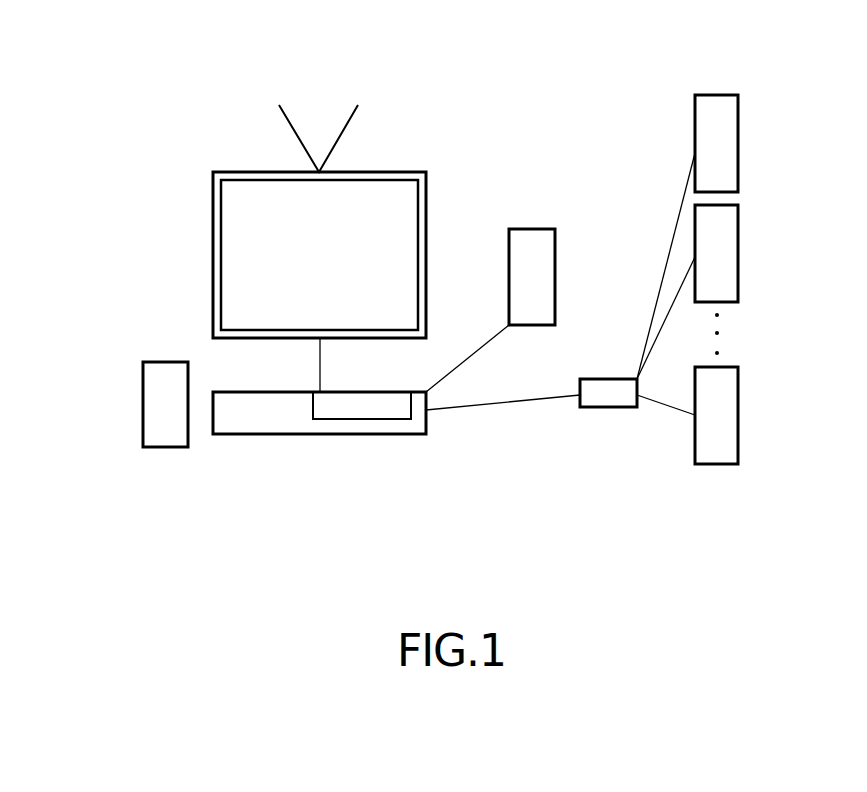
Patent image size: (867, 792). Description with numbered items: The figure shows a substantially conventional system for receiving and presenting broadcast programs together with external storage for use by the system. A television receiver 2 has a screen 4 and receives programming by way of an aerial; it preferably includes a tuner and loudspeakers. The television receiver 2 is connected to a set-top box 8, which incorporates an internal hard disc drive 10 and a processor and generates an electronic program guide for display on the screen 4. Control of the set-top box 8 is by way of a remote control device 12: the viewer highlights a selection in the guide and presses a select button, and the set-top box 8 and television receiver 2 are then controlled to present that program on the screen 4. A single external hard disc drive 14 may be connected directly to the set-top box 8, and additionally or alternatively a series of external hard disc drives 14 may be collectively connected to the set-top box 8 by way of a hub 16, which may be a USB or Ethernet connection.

The television receiver 2 is at (212, 200).
The screen 4 is at (233, 248).
The set-top box 8 is at (268, 434).
The internal hard disc drive 10 is at (391, 413).
The remote control device 12 is at (143, 405).
The external hard disc drive 14 is at (538, 238).
The hub 16 is at (607, 407).